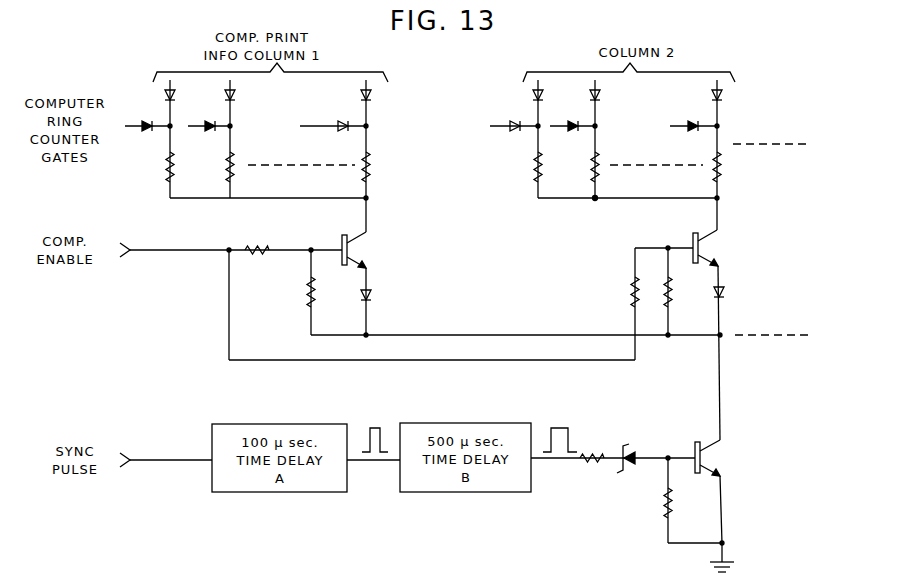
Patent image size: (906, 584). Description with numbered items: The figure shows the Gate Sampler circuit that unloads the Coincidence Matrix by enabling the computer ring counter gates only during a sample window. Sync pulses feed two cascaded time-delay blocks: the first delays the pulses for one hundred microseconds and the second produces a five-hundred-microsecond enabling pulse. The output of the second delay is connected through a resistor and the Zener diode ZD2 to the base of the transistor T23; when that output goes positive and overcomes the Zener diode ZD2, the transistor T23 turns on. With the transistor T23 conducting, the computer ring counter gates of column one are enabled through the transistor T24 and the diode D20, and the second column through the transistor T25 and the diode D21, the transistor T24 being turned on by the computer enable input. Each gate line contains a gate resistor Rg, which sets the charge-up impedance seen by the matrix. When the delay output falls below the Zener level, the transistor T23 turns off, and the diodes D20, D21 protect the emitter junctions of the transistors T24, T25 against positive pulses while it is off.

The gate resistor Rg is at (159, 139).
The transistor T24 is at (368, 266).
The transistor T25 is at (719, 319).
The transistor T23 is at (720, 491).
The diode D20 is at (384, 297).
The diode D21 is at (736, 293).
The Zener diode ZD2 is at (636, 449).